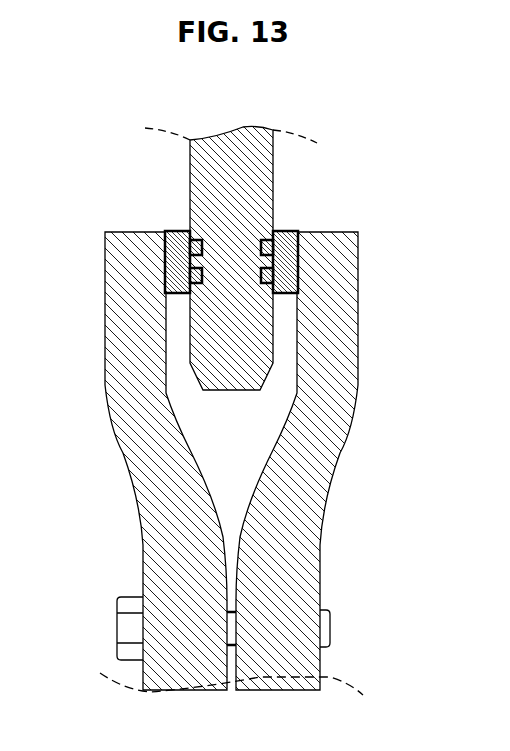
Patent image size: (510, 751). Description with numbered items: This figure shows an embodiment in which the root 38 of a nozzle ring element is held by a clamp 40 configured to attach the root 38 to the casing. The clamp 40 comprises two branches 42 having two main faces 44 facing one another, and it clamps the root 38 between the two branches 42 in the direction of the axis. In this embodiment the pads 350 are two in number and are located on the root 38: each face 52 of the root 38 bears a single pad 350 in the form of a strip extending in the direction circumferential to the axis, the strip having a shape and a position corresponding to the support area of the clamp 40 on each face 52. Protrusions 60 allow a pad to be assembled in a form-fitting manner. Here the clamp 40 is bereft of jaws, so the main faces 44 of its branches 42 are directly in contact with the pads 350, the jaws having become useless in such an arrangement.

The root 38 is at (248, 226).
The clamp 40 is at (308, 484).
The branches 42 is at (196, 543).
The main faces 44 is at (198, 451).
The face of the root 52 is at (184, 190).
The protrusions 60 is at (198, 276).
The pads 350 is at (178, 243).